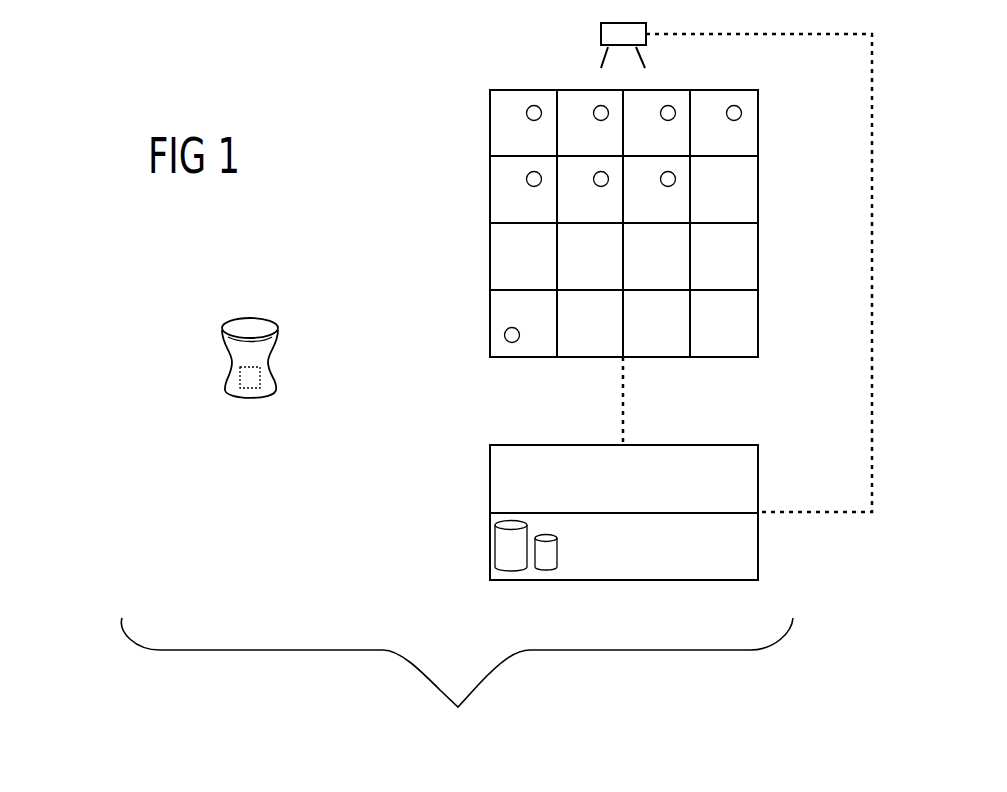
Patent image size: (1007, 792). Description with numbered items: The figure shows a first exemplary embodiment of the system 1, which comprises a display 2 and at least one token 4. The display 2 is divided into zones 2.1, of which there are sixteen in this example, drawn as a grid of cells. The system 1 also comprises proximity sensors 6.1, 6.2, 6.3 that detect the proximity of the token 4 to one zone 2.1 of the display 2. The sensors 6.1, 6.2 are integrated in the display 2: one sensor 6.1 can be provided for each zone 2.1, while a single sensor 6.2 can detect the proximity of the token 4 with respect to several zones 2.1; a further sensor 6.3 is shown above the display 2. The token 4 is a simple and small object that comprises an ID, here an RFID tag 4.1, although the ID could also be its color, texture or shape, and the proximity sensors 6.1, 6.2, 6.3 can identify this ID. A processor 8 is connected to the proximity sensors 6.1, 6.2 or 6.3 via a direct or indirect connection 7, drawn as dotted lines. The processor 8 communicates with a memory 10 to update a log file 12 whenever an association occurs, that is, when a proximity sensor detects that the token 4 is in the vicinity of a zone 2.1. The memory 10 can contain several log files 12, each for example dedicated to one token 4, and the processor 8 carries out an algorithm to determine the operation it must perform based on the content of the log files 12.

The system 1 is at (457, 688).
The display 2 is at (778, 194).
The zone 2.1 is at (518, 252).
The token 4 is at (250, 347).
The RFID tag 4.1 is at (242, 380).
The proximity sensor 6.1 is at (533, 114).
The proximity sensor 6.2 is at (511, 336).
The proximity sensor 6.3 is at (614, 38).
The connection 7 is at (621, 400).
The processor 8 is at (502, 460).
The memory 10 is at (580, 567).
The log file 12 is at (512, 540).